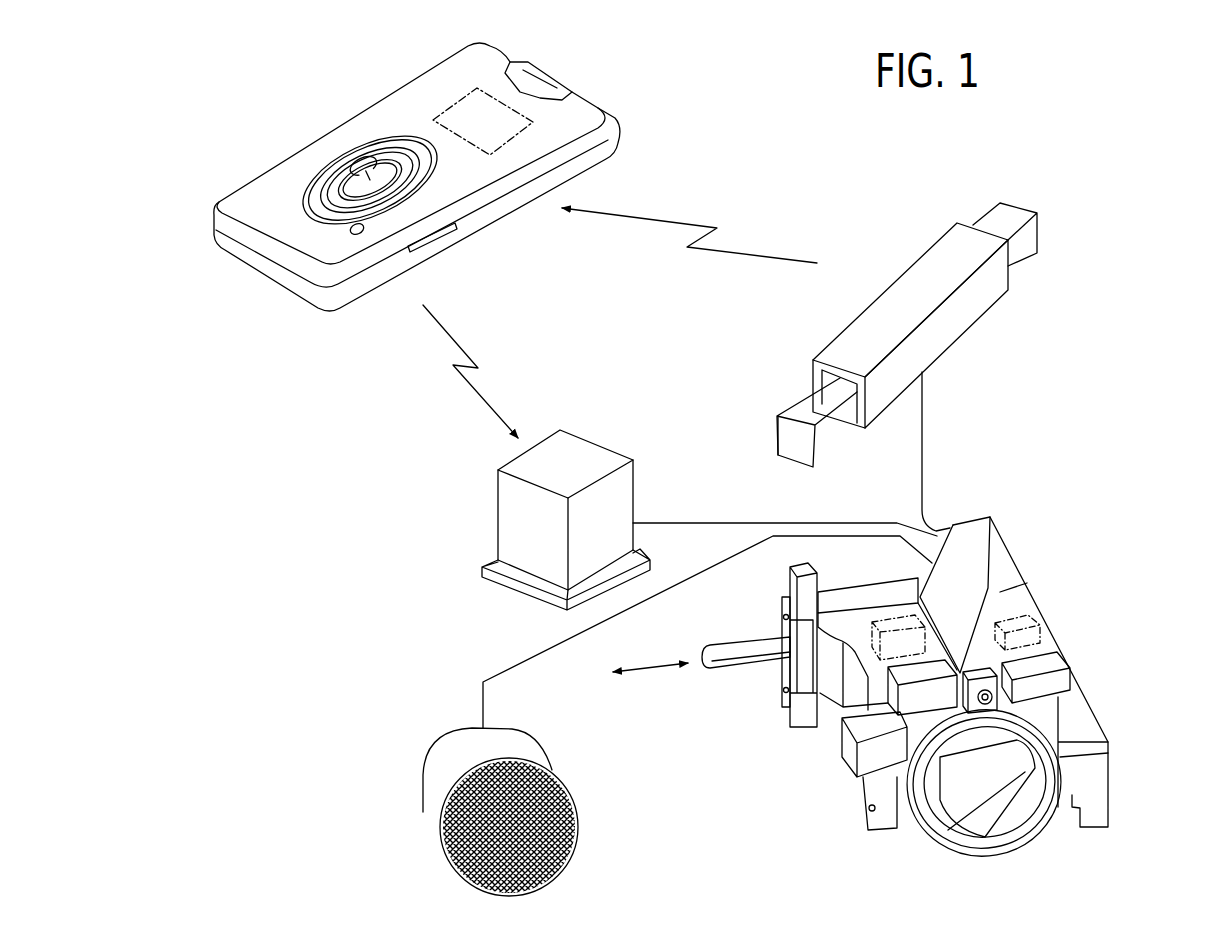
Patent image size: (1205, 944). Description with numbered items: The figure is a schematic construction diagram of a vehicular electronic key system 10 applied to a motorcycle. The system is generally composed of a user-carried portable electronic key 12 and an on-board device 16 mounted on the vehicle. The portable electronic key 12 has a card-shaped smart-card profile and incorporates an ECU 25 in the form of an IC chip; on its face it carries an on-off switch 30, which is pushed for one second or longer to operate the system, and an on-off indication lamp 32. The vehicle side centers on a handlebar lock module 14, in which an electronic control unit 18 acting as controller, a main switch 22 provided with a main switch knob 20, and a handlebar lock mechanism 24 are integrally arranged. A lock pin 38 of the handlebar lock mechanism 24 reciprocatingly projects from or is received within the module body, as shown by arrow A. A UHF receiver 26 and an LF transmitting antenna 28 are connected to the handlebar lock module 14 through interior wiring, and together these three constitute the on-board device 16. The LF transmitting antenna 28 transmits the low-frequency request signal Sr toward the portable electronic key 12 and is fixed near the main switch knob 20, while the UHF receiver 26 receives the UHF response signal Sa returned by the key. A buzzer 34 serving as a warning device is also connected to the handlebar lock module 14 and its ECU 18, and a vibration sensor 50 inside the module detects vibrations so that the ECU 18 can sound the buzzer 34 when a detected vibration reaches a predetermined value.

The vehicular electronic key system 10 is at (784, 171).
The portable electronic key 12 is at (410, 127).
The handlebar lock module 14 is at (994, 551).
The on-board device 16 is at (1025, 371).
The electronic control unit (ECU) 18 is at (870, 600).
The main switch knob 20 is at (1020, 782).
The main switch 22 is at (1043, 743).
The handlebar lock mechanism 24 is at (752, 674).
The ECU 25 is at (458, 108).
The UHF receiver 26 is at (587, 468).
The LF transmitting antenna 28 is at (890, 292).
The on-off switch 30 is at (350, 167).
The on-off indication lamp 32 is at (359, 236).
The buzzer 34 is at (507, 755).
The lock pin 38 is at (750, 647).
The vibration sensor 50 is at (1055, 628).